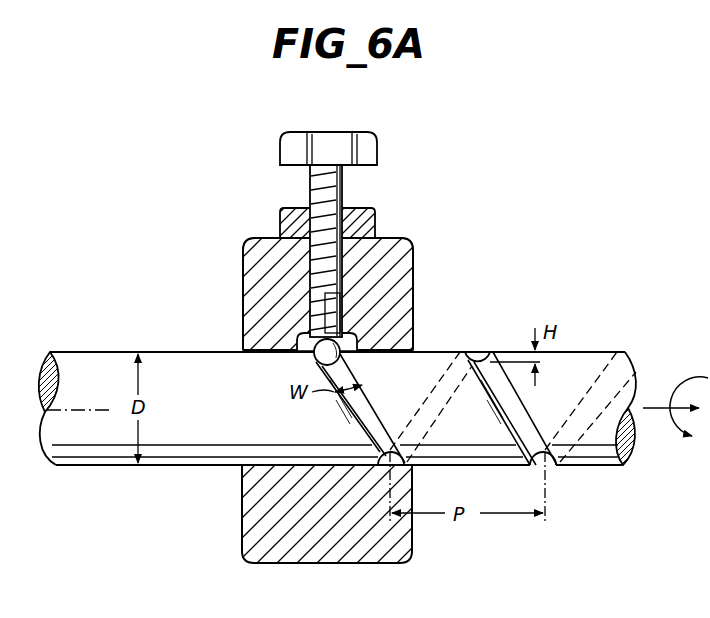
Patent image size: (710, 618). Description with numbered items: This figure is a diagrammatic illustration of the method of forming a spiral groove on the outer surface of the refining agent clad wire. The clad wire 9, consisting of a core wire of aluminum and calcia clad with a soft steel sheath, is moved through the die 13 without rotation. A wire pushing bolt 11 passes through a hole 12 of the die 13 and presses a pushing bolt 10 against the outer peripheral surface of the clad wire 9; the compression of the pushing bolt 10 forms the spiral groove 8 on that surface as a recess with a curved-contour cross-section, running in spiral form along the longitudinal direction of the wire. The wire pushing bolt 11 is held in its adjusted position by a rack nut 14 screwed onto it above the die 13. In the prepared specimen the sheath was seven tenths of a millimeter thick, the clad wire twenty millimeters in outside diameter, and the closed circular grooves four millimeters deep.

The spiral groove 8 is at (484, 357).
The clad wire 9 is at (590, 352).
The pushing bolt 10 is at (345, 345).
The wire pushing bolt 11 is at (378, 139).
The hole 12 is at (377, 237).
The die 13 is at (414, 262).
The rack nut 14 is at (280, 215).